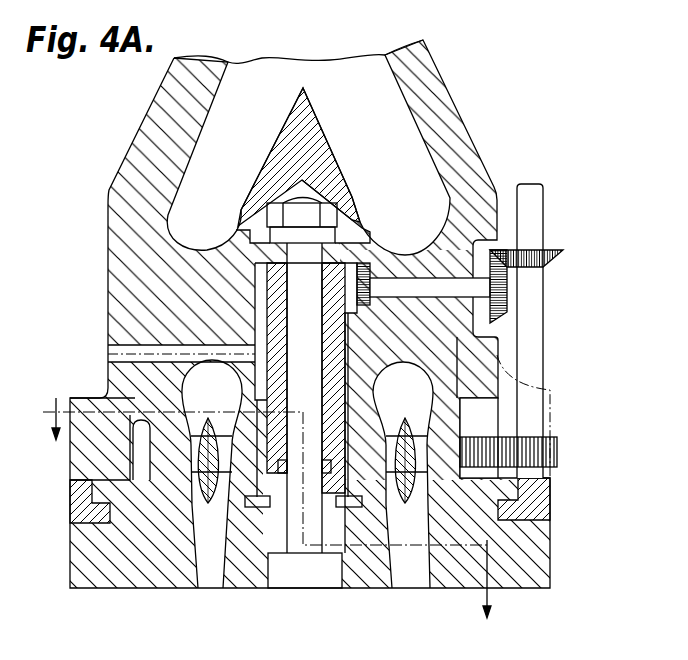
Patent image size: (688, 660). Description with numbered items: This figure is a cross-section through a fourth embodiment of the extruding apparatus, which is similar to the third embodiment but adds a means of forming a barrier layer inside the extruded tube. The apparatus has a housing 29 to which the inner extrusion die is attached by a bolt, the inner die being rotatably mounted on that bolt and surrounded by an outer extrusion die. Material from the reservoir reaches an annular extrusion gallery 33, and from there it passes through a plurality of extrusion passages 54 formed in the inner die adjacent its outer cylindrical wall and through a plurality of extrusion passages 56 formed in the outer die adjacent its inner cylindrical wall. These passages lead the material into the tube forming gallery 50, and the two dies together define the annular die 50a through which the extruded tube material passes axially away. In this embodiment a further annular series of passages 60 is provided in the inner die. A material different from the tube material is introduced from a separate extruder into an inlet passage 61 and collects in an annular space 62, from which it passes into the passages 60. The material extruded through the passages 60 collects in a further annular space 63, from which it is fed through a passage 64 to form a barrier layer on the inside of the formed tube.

The housing 29 is at (103, 278).
The annular extrusion gallery 33 is at (222, 394).
The tube forming gallery 50 is at (402, 513).
The annular die 50a is at (212, 572).
The extrusion passages 54 is at (255, 418).
The extrusion passages 56 is at (462, 412).
The passages 60 is at (260, 477).
The inlet passage 61 is at (117, 356).
The annular space 62 is at (260, 373).
The further annular space 63 is at (257, 507).
The passage 64 is at (387, 518).